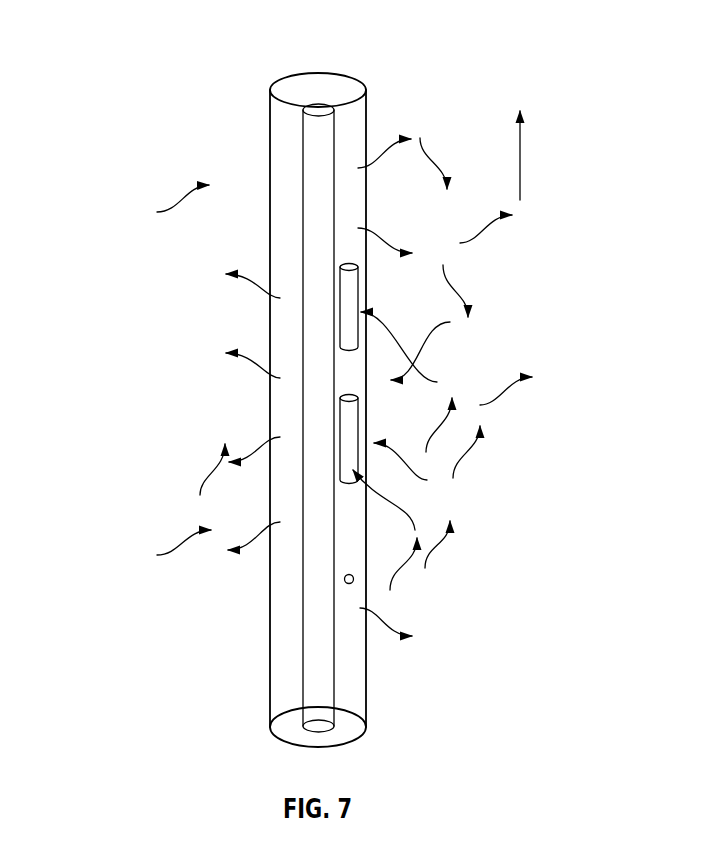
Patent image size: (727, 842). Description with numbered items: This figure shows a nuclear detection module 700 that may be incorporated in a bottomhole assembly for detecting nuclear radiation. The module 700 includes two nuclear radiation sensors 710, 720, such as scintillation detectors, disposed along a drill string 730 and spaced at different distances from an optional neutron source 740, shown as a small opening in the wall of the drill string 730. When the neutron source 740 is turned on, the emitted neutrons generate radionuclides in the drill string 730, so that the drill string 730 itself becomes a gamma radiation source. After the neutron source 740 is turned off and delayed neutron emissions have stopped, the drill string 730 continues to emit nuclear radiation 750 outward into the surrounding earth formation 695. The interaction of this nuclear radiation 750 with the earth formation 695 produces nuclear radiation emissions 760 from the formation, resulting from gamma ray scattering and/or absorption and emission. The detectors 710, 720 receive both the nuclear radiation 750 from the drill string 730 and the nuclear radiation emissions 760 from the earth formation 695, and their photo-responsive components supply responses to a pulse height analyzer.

The nuclear detection module 700 is at (121, 111).
The nuclear radiation sensor 710 is at (362, 300).
The nuclear radiation sensor 720 is at (362, 425).
The drill string 730 is at (355, 676).
The neutron source 740 is at (344, 579).
The nuclear radiation 750 is at (268, 300).
The nuclear radiation emissions 760 is at (520, 182).
The earth formation 695 is at (537, 338).